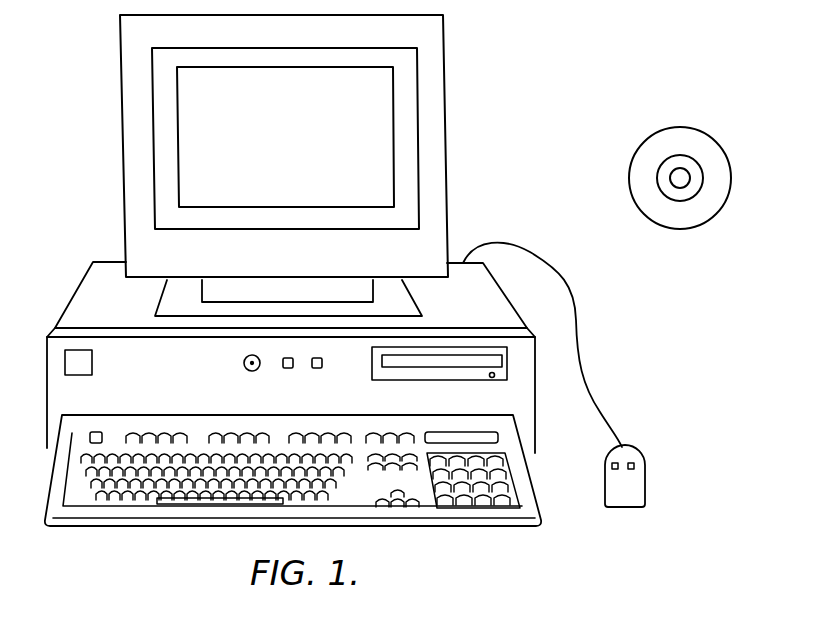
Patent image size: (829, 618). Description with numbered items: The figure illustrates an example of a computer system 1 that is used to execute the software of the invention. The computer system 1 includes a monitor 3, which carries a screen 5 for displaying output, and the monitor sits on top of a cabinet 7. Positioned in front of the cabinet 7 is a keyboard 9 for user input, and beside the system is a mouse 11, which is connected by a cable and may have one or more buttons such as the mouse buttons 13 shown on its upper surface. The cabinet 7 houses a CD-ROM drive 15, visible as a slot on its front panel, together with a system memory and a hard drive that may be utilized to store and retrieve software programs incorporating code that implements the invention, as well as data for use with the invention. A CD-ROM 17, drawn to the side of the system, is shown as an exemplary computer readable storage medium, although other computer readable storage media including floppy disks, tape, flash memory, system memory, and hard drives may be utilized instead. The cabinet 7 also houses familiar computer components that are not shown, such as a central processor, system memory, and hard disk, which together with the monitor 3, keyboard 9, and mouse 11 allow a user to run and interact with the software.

The computer system 1 is at (594, 31).
The monitor 3 is at (444, 118).
The screen 5 is at (368, 110).
The cabinet 7 is at (485, 312).
The keyboard 9 is at (250, 527).
The mouse 11 is at (628, 488).
The mouse buttons 13 is at (634, 458).
The CD-ROM drive 15 is at (507, 367).
The CD-ROM 17 is at (708, 133).